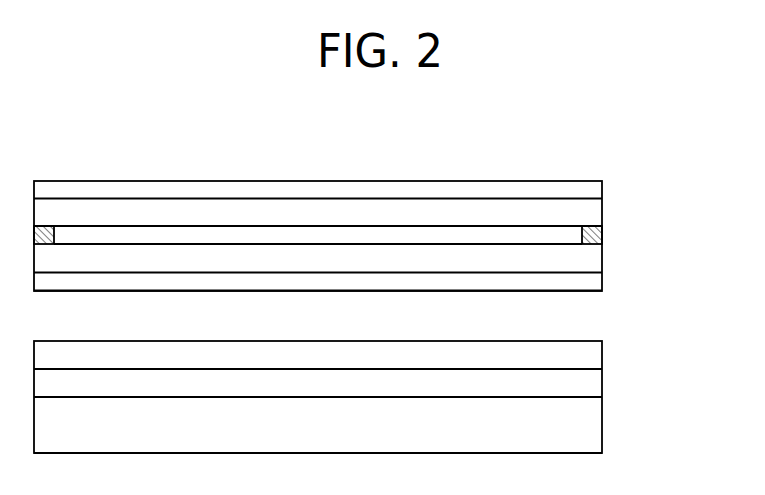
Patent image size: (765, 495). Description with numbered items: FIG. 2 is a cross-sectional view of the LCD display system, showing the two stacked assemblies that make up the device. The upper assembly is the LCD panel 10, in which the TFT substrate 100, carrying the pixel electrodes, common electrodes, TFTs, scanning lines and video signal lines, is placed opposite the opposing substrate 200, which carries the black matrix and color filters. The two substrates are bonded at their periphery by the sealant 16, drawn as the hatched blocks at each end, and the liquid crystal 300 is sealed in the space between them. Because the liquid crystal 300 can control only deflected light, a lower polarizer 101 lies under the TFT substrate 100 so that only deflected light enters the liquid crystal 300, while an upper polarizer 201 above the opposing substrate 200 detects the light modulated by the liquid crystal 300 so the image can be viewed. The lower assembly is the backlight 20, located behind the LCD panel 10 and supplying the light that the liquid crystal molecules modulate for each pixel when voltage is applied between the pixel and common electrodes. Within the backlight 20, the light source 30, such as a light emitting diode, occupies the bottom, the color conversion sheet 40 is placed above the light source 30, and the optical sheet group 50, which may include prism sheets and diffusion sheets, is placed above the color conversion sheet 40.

The LCD panel 10 is at (682, 143).
The liquid crystal 300 is at (490, 233).
The upper polarizer 201 is at (602, 190).
The opposing substrate 200 is at (602, 212).
The sealant 16 is at (602, 237).
The TFT substrate 100 is at (602, 260).
The lower polarizer 101 is at (602, 284).
The backlight 20 is at (668, 330).
The optical sheet group 50 is at (602, 353).
The color conversion sheet 40 is at (602, 383).
The light source 30 is at (602, 430).